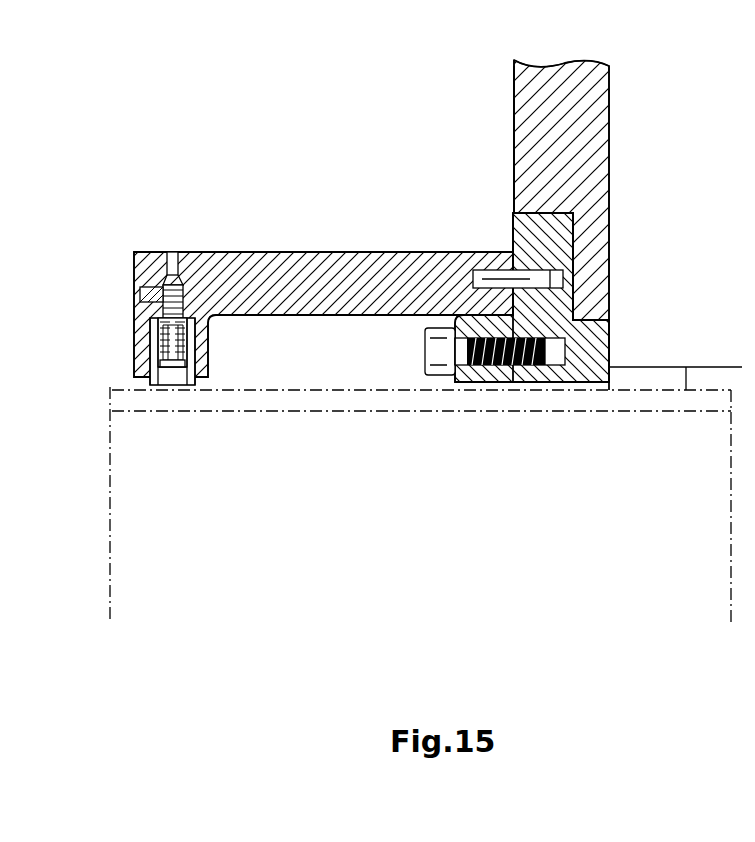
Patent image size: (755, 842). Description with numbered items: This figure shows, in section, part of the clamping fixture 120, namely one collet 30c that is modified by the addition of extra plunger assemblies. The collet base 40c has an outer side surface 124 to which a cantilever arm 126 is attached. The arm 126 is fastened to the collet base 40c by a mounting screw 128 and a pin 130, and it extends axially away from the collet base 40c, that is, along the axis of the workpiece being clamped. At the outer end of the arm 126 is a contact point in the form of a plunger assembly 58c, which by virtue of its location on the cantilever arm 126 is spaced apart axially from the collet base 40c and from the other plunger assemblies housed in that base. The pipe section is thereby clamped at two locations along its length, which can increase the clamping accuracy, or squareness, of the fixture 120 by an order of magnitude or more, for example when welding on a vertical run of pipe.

The collet 30c is at (612, 91).
The collet base 40c is at (593, 145).
The plunger assembly 58c is at (146, 343).
The clamping fixture 120 is at (640, 245).
The outer side surface 124 is at (514, 132).
The cantilever arm 126 is at (340, 252).
The mounting screw 128 is at (440, 355).
The pin 130 is at (495, 280).